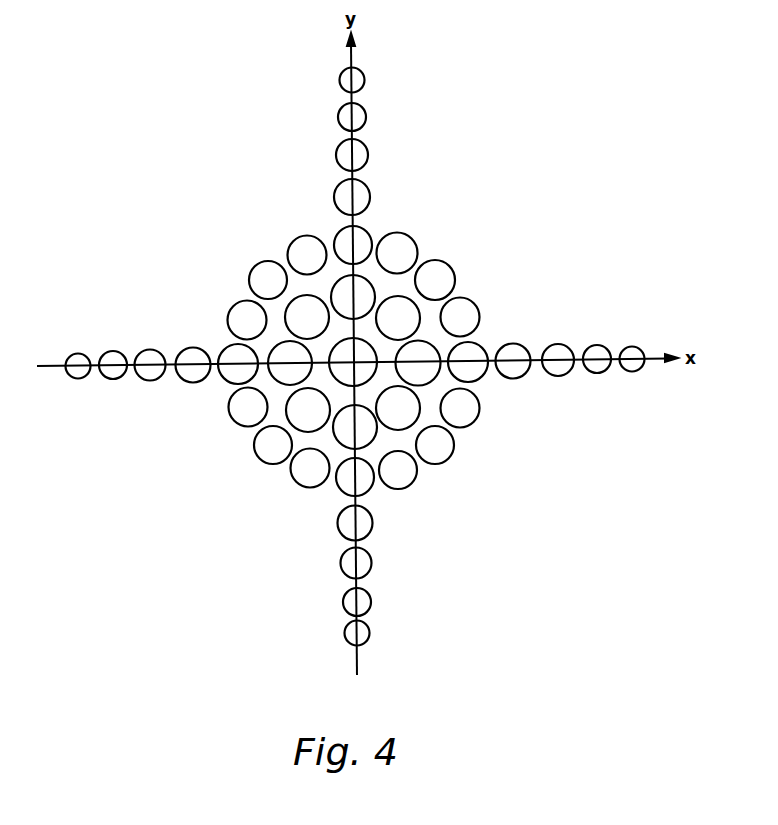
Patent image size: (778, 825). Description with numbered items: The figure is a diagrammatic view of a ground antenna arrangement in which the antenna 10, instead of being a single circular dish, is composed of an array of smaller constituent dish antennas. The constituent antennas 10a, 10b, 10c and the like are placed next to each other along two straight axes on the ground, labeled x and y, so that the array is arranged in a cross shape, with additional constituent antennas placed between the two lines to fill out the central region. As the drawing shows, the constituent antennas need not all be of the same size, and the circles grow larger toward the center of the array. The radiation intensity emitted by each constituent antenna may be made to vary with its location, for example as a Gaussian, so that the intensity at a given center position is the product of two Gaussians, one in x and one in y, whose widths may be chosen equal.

The antenna 10 is at (249, 254).
The constituent dish antenna 10a is at (76, 379).
The constituent dish antenna 10b is at (111, 379).
The constituent dish antenna 10c is at (148, 380).